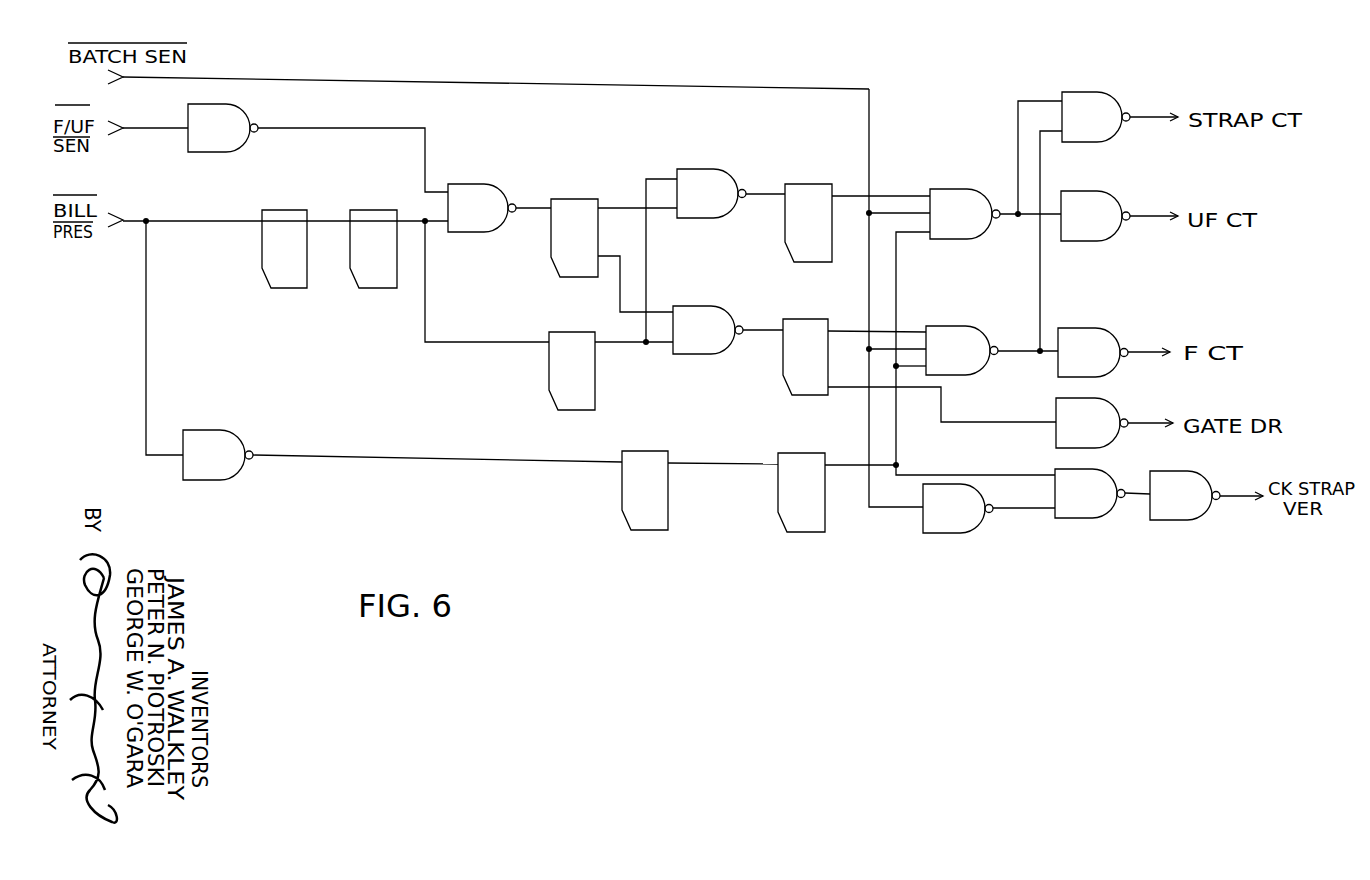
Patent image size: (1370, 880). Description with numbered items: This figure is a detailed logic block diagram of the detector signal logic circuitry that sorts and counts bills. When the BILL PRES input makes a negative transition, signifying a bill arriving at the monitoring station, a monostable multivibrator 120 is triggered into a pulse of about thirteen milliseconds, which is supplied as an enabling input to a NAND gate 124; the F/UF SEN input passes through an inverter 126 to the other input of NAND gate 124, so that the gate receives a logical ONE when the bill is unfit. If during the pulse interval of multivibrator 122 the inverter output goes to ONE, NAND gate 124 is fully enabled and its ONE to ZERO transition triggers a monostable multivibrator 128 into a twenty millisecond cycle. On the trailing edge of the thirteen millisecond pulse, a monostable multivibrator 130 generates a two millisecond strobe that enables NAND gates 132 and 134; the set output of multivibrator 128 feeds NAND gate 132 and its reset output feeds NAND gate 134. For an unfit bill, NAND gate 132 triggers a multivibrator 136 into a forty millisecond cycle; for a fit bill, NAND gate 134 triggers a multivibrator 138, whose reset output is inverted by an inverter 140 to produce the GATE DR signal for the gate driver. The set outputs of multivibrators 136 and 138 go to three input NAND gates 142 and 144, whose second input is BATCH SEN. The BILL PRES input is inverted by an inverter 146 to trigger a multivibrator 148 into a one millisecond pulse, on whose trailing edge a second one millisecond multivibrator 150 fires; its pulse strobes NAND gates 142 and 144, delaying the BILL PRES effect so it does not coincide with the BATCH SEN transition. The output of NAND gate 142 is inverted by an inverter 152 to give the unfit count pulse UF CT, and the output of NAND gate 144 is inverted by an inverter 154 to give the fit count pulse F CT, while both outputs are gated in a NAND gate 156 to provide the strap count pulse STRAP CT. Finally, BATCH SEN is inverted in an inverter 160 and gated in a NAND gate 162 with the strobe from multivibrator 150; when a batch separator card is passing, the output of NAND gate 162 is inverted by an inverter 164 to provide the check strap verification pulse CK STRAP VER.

The monostable multivibrator 120 is at (287, 283).
The multivibrator 122 is at (372, 283).
The NAND gate 124 is at (485, 190).
The inverter 126 is at (242, 115).
The monostable multivibrator 128 is at (580, 277).
The monostable multivibrator 130 is at (574, 405).
The NAND gate 132 is at (710, 178).
The NAND gate 134 is at (708, 350).
The multivibrator 136 is at (815, 259).
The multivibrator 138 is at (805, 385).
The inverter 140 is at (1108, 413).
The three input NAND gate 142 is at (948, 192).
The three input NAND gate 144 is at (968, 332).
The inverter 146 is at (226, 432).
The multivibrator 148 is at (645, 525).
The monostable multivibrator 150 is at (800, 525).
The inverter 152 is at (1105, 200).
The inverter 154 is at (1103, 340).
The NAND gate 156 is at (1106, 99).
The inverter 160 is at (964, 527).
The NAND gate 162 is at (1082, 513).
The inverter 164 is at (1192, 513).